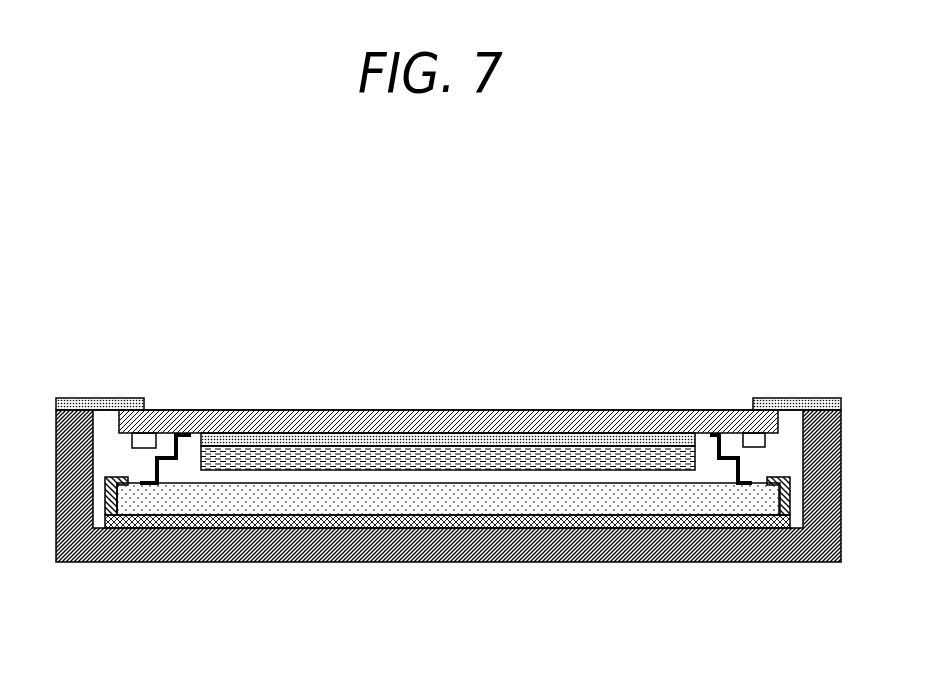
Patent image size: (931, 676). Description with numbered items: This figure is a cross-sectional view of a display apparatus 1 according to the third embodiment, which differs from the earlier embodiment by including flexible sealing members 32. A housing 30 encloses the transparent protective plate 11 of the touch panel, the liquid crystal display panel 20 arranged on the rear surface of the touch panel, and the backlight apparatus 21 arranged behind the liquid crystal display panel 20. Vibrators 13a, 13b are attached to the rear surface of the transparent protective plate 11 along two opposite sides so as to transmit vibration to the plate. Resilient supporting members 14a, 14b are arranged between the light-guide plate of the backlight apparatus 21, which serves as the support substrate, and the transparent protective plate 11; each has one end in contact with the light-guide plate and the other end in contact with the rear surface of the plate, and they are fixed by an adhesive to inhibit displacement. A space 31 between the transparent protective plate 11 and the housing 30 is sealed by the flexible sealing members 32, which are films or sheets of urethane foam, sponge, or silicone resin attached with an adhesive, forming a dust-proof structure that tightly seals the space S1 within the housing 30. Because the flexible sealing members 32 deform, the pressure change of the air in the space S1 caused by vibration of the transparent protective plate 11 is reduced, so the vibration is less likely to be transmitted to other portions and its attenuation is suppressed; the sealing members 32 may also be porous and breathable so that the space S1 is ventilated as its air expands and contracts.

The liquid crystal display apparatus 1 is at (677, 298).
The transparent protective plate 11 is at (228, 415).
The vibrator 13a is at (140, 437).
The vibrator 13b is at (758, 440).
The resilient supporting member 14a is at (170, 438).
The resilient supporting member 14b is at (730, 457).
The liquid crystal display panel 20 is at (298, 455).
The backlight apparatus 21 is at (326, 498).
The housing 30 is at (512, 535).
The space 31 is at (103, 422).
The flexible sealing member 32 is at (83, 400).
The space S1 is at (125, 465).